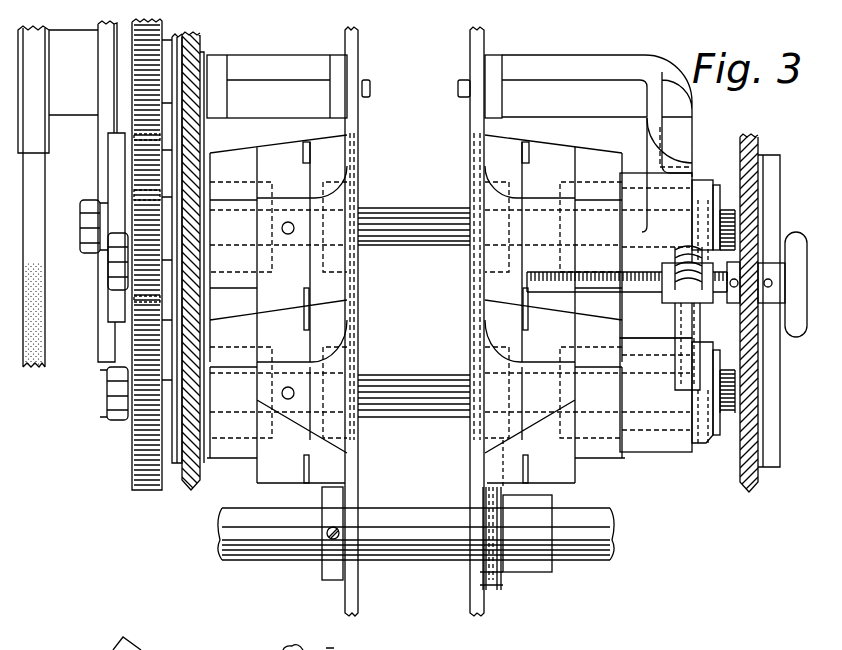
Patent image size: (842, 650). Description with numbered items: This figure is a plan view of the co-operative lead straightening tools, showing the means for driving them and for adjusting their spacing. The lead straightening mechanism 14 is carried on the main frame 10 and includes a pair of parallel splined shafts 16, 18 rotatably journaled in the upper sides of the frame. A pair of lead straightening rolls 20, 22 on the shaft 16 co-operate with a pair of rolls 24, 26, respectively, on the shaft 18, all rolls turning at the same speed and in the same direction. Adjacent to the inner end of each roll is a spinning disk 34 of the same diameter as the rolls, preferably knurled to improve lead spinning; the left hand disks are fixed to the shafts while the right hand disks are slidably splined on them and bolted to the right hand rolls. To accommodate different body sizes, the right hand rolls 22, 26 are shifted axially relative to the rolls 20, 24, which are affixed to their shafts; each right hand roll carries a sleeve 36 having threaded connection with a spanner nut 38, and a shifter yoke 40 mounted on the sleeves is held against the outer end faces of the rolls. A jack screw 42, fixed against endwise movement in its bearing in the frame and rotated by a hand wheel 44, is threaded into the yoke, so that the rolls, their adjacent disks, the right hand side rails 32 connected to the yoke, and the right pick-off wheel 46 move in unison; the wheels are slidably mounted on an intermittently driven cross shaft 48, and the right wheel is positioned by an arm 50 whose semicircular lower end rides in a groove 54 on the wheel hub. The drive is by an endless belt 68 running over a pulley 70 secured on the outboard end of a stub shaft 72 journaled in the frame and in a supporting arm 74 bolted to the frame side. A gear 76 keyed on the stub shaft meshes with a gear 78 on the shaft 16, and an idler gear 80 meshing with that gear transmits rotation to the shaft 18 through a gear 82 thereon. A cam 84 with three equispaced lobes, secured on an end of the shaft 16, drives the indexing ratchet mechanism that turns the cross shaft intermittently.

The main frame 10 is at (186, 491).
The lead straightening mechanism 14 is at (697, 520).
The splined shaft 16 is at (413, 208).
The splined shaft 18 is at (413, 376).
The lead straightening roll 20 is at (283, 144).
The lead straightening roll 22 is at (553, 143).
The lead straightening roll 24 is at (268, 484).
The lead straightening roll 26 is at (570, 484).
The side rail 32 is at (362, 57).
The spinning disk 34 is at (352, 134).
The sleeve 36 is at (637, 193).
The spanner nut 38 is at (703, 178).
The shifter yoke 40 is at (694, 118).
The jack screw 42 is at (722, 297).
The hand wheel 44 is at (796, 340).
The pick-off wheel 46 is at (360, 600).
The cross shaft 48 is at (593, 561).
The arm 50 is at (505, 458).
The groove 54 is at (490, 592).
The endless belt 68 is at (32, 370).
The pulley 70 is at (52, 148).
The stub shaft 72 is at (63, 116).
The supporting arm 74 is at (97, 355).
The gear 76 is at (165, 32).
The gear 78 is at (135, 160).
The idler gear 80 is at (130, 267).
The gear 82 is at (140, 455).
The cam 84 is at (108, 187).